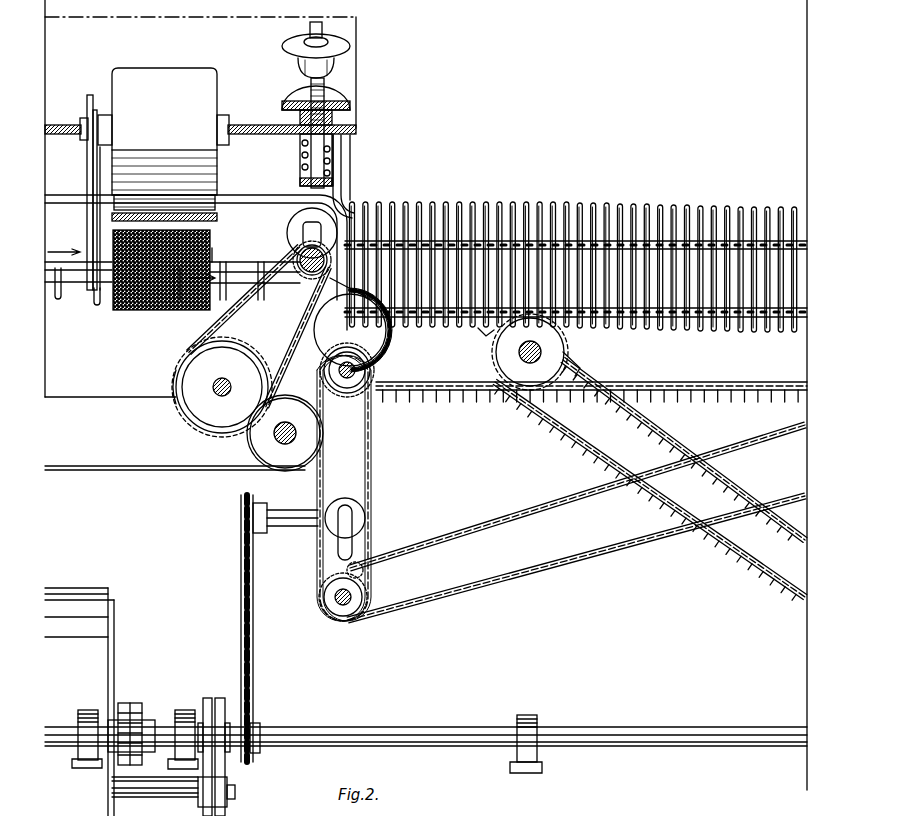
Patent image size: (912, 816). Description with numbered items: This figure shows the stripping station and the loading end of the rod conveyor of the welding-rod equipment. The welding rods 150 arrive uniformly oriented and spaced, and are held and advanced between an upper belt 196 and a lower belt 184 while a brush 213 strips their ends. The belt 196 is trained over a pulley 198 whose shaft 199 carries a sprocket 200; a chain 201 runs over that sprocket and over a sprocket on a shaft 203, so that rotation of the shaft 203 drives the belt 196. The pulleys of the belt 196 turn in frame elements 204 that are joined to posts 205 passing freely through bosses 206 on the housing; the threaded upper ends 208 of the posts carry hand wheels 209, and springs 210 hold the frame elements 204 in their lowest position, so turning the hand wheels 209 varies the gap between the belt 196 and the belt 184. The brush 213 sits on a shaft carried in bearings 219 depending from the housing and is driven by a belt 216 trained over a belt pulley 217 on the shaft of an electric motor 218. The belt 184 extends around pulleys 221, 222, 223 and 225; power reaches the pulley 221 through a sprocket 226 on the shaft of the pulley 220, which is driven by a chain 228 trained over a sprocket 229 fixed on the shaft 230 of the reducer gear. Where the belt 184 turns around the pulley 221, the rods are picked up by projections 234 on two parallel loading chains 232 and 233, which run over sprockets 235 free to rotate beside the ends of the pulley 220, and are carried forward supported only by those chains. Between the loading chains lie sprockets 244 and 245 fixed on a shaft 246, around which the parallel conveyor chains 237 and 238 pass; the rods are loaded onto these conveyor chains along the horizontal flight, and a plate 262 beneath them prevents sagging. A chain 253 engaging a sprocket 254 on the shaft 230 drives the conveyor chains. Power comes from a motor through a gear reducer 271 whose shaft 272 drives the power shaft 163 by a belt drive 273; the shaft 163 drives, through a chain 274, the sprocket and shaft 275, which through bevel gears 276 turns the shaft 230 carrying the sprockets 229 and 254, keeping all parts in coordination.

The rods 150 is at (558, 206).
The power shaft 163 is at (410, 727).
The belt 184 is at (72, 295).
The belt 196 is at (58, 138).
The pulley 198 is at (292, 226).
The shaft 199 is at (294, 214).
The sprocket 200 is at (296, 258).
The chain 201 is at (190, 430).
The shaft 203 is at (218, 390).
The frame elements 204 is at (300, 182).
The posts 205 is at (332, 148).
The bosses 206 is at (334, 118).
The threaded upper ends 208 is at (324, 86).
The hand wheels 209 is at (350, 100).
The springs 210 is at (303, 146).
The brush 213 is at (121, 310).
The belt 216 is at (92, 180).
The belt pulley 217 is at (88, 104).
The electric motor 218 is at (163, 70).
The bearings 219 is at (213, 256).
The pulley 220 is at (342, 313).
The pulley 221 is at (386, 326).
The pulley 222 is at (249, 346).
The pulley 223 is at (270, 466).
The pulley 225 is at (347, 370).
The sprocket 226 is at (344, 388).
The chain 228 is at (377, 453).
The sprocket 229 is at (338, 620).
The shaft 230 is at (335, 597).
The chain 232 is at (771, 330).
The chain 233 is at (426, 208).
The projections 234 is at (478, 208).
The sprockets 235 is at (386, 356).
The conveyor chain 237 is at (588, 440).
The conveyor chain 238 is at (664, 422).
The sprocket 244 is at (572, 344).
The sprocket 245 is at (473, 333).
The shaft 246 is at (538, 346).
The chain 253 is at (546, 560).
The sprocket 254 is at (367, 568).
The plate 262 is at (192, 408).
The gear reducer 271 is at (116, 648).
The shaft 272 is at (232, 791).
The belt drive 273 is at (210, 698).
The chain 274 is at (253, 656).
The sprocket and shaft 275 is at (266, 533).
The bevel gears 276 is at (335, 496).